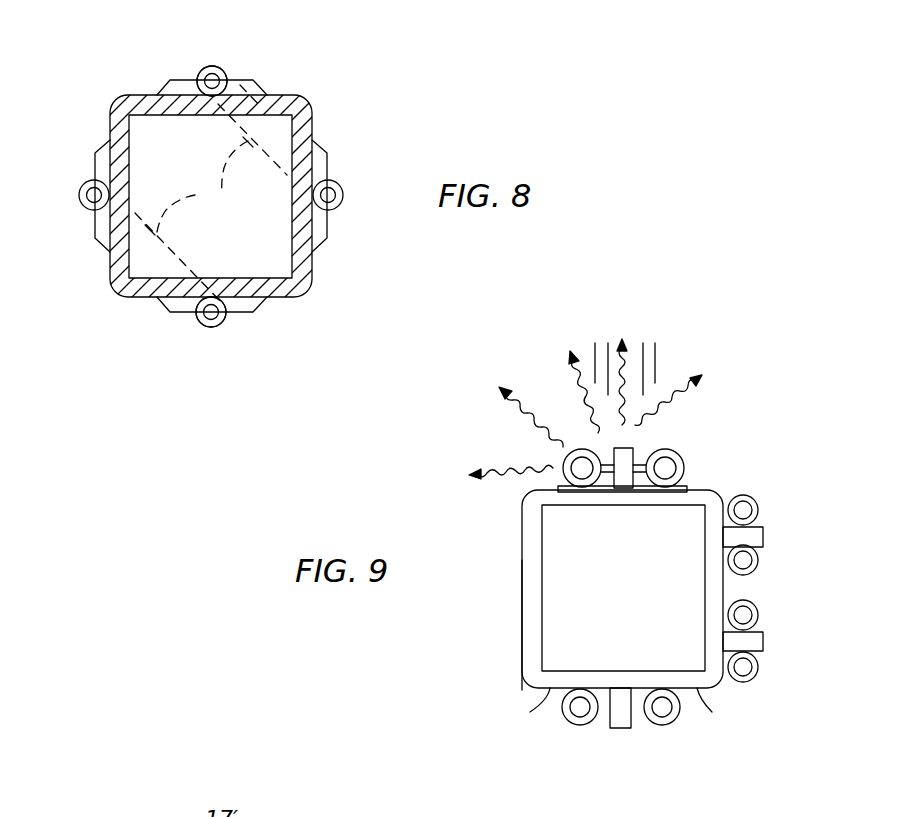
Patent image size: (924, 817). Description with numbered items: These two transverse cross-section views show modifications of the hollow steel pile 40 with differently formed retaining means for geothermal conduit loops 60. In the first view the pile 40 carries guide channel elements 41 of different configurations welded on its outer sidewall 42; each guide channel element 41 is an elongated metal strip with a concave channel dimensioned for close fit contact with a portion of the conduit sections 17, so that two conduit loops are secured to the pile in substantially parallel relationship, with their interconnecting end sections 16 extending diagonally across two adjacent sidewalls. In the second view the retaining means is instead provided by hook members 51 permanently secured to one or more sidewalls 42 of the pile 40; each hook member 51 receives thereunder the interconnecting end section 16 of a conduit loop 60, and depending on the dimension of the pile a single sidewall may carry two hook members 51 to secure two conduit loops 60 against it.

In FIG. 8, the interconnecting end section 16 is at (211, 194).
In FIG. 9, the interconnecting end section 16 is at (642, 447).
In FIG. 8, the conduit section 17 is at (343, 197).
In FIG. 9, the conduit section 17 is at (683, 468).
In FIG. 9, the hollow steel pile 40 is at (522, 565).
In FIG. 8, the guide channel element 41 is at (185, 80).
In FIG. 9, the outer sidewall 42 is at (522, 624).
In FIG. 9, the hook member 51 is at (765, 536).
In FIG. 8, the conduit loop 60 is at (226, 77).
In FIG. 9, the conduit loop 60 is at (575, 450).